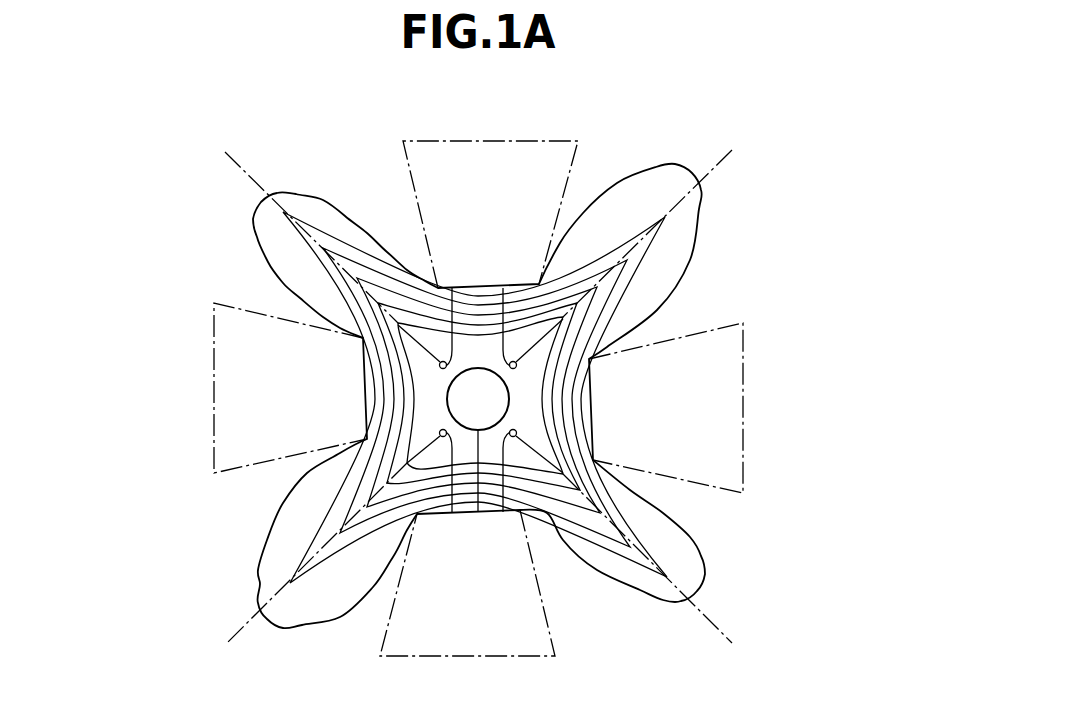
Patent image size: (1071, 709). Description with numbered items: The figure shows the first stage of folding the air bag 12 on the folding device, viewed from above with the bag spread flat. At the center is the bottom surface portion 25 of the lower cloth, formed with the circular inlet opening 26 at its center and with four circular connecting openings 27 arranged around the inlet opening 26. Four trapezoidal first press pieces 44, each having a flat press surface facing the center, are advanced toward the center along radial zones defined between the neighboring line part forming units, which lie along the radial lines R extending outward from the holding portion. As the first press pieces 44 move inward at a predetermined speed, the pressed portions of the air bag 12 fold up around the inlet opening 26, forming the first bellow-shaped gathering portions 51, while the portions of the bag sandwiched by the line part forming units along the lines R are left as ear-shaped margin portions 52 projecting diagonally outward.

The air bag 12 is at (647, 167).
The bottom surface portion 25 is at (548, 520).
The circular inlet opening 26 is at (478, 512).
The circular connecting openings 27 is at (452, 290).
The first press pieces 44 is at (408, 178).
The first bellow-shaped gathering portions 51 is at (480, 298).
The ear-shaped margin portions 52 is at (300, 192).
The radial lines R is at (248, 170).